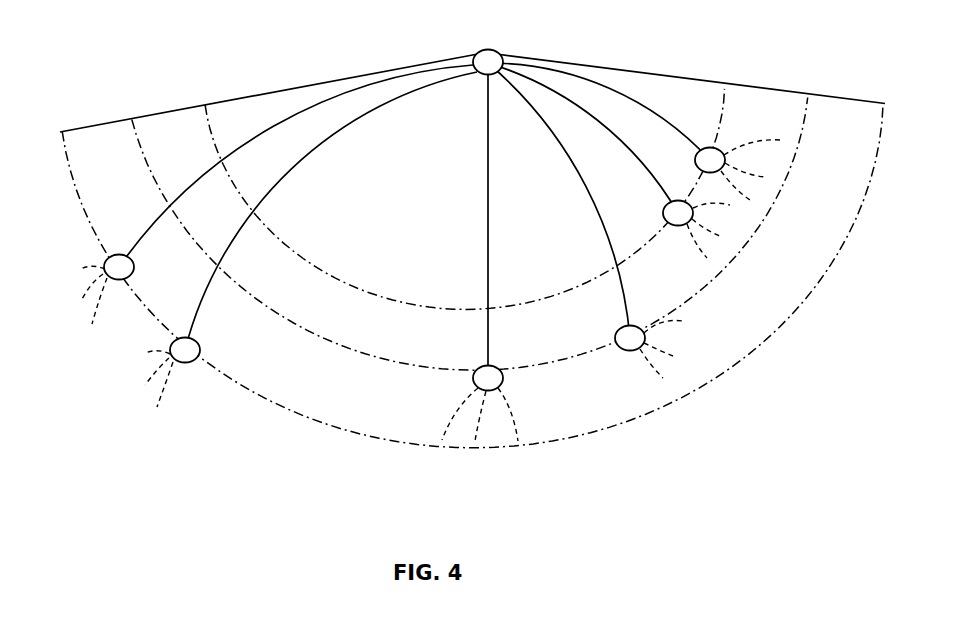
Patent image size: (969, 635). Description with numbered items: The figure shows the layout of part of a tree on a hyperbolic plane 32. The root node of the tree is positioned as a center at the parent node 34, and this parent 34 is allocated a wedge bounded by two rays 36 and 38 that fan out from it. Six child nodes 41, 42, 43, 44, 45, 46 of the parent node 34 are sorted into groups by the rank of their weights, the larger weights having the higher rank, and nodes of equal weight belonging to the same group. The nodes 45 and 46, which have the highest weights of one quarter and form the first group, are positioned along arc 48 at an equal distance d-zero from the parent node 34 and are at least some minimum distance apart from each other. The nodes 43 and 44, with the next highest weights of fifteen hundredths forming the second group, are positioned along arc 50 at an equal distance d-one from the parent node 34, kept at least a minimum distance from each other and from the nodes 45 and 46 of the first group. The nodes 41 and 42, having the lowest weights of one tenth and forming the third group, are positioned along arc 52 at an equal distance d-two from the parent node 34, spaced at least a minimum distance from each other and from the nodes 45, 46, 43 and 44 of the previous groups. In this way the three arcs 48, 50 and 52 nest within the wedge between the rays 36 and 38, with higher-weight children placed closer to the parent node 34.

The hyperbolic plane 32 is at (163, 42).
The parent node 34 is at (500, 54).
The ray 36 is at (361, 73).
The ray 38 is at (631, 72).
The node 41 is at (133, 261).
The node 42 is at (200, 345).
The node 43 is at (475, 370).
The node 44 is at (620, 330).
The node 45 is at (663, 216).
The node 46 is at (696, 163).
The arc 48 is at (461, 309).
The arc 50 is at (365, 350).
The arc 52 is at (772, 333).